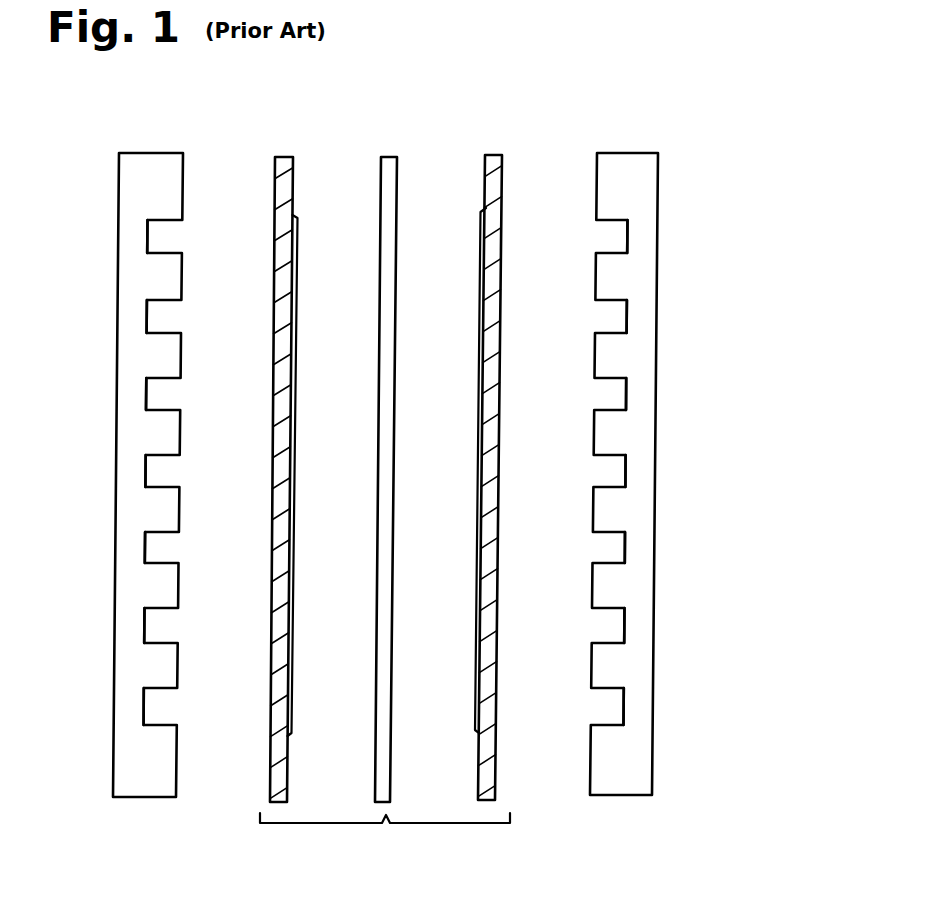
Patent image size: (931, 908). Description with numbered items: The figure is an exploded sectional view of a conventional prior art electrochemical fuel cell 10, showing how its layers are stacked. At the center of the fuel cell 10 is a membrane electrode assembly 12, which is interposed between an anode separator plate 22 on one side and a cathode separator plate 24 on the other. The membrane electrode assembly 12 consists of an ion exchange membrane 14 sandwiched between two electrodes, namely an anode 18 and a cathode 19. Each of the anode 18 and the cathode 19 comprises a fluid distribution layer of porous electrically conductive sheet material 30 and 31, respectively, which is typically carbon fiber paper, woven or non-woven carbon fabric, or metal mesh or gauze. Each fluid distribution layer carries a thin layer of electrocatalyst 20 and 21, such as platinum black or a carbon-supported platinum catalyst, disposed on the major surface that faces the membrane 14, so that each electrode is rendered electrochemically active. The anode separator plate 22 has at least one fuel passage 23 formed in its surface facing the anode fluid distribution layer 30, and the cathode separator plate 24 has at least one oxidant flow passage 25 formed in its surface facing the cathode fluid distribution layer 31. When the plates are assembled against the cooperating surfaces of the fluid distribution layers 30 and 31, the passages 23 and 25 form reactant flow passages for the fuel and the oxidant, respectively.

The fuel cell 10 is at (656, 146).
The membrane electrode assembly 12 is at (385, 835).
The ion exchange membrane 14 is at (375, 805).
The anode 18 is at (268, 800).
The cathode 19 is at (496, 799).
The electrocatalyst 20 is at (297, 246).
The electrocatalyst 21 is at (484, 236).
The anode separator plate 22 is at (122, 783).
The fuel passage 23 is at (158, 630).
The cathode separator plate 24 is at (634, 789).
The oxidant flow passage 25 is at (614, 711).
The porous electrically conductive sheet material 30 is at (275, 255).
The porous electrically conductive sheet material 31 is at (502, 241).